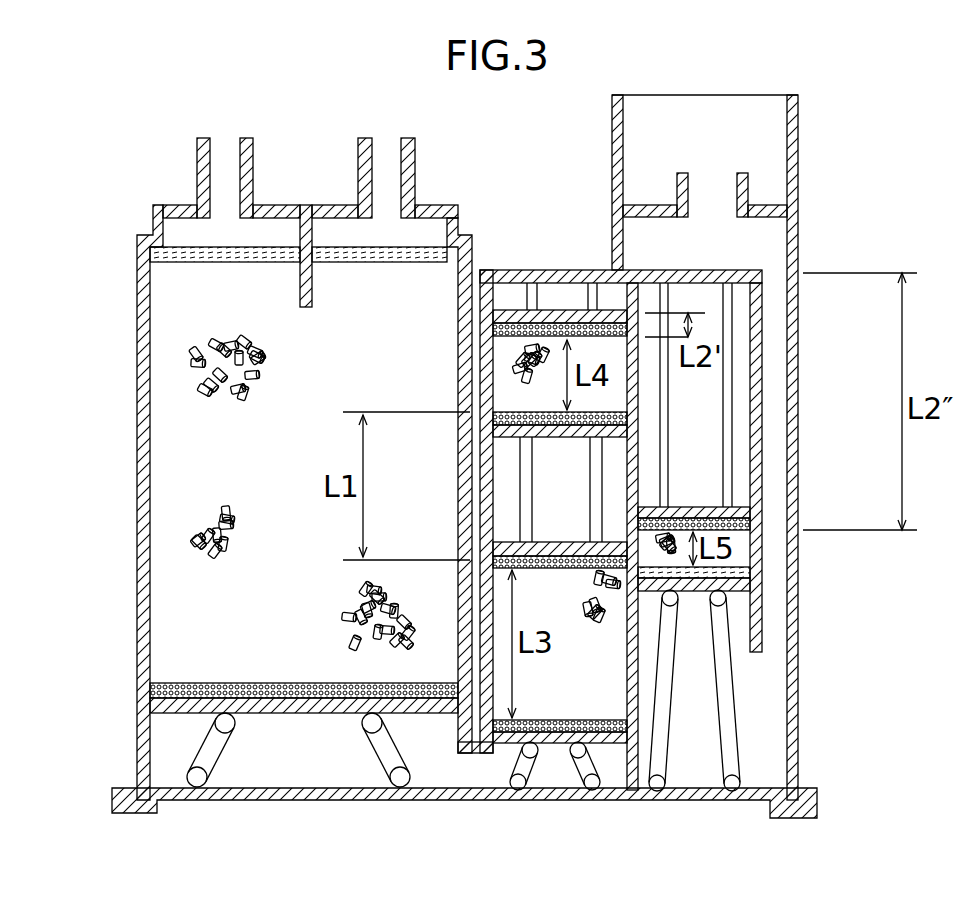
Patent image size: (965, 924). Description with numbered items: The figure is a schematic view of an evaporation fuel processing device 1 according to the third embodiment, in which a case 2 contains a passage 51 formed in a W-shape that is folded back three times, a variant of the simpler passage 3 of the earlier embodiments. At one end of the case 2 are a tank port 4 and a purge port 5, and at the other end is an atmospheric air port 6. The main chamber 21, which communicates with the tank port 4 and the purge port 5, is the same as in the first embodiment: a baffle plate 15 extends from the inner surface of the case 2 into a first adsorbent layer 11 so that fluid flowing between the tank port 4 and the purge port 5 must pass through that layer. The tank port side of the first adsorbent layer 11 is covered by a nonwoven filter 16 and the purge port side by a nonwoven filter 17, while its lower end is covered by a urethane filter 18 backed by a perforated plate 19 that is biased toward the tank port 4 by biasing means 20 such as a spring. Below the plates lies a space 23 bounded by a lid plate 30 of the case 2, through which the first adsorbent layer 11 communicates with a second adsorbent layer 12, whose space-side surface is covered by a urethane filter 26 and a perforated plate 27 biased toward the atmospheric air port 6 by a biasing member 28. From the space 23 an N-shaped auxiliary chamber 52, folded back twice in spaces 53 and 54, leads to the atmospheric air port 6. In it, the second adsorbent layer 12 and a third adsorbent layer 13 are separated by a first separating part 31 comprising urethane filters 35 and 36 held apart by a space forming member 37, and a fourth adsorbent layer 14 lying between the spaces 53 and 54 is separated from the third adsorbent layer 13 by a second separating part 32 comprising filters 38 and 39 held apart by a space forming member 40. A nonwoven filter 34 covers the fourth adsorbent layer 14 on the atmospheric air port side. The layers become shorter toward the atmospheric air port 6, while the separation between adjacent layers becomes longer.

The evaporation fuel processing device 1 is at (135, 228).
The case 2 is at (142, 545).
The passage 3 is at (180, 480).
The tank port 4 is at (222, 170).
The purge port 5 is at (375, 168).
The atmospheric air port 6 is at (712, 187).
The first adsorbent layer 11 is at (218, 318).
The second adsorbent layer 12 is at (500, 660).
The third adsorbent layer 13 is at (540, 318).
The fourth adsorbent layer 14 is at (733, 558).
The baffle plate 15 is at (308, 290).
The filter 16 is at (235, 253).
The filter 17 is at (393, 255).
The filter 18 is at (252, 690).
The plate 19 is at (305, 705).
The biasing means 20 is at (200, 780).
The main chamber 21 is at (172, 665).
The space 23 is at (328, 770).
The filter 26 is at (583, 720).
The plate 27 is at (617, 745).
The biasing member 28 is at (580, 767).
The lid plate 30 is at (457, 790).
The first separating part 31 is at (508, 498).
The second separating part 32 is at (733, 453).
The filter 34 is at (747, 583).
The filter 35 is at (490, 556).
The filter 36 is at (490, 432).
The space forming member 37 is at (520, 460).
The filter 38 is at (510, 310).
The filter 39 is at (752, 527).
The space forming member 40 is at (590, 310).
The passage 51 is at (733, 430).
The auxiliary chamber 52 is at (707, 320).
The space 53 is at (560, 310).
The space 54 is at (745, 700).